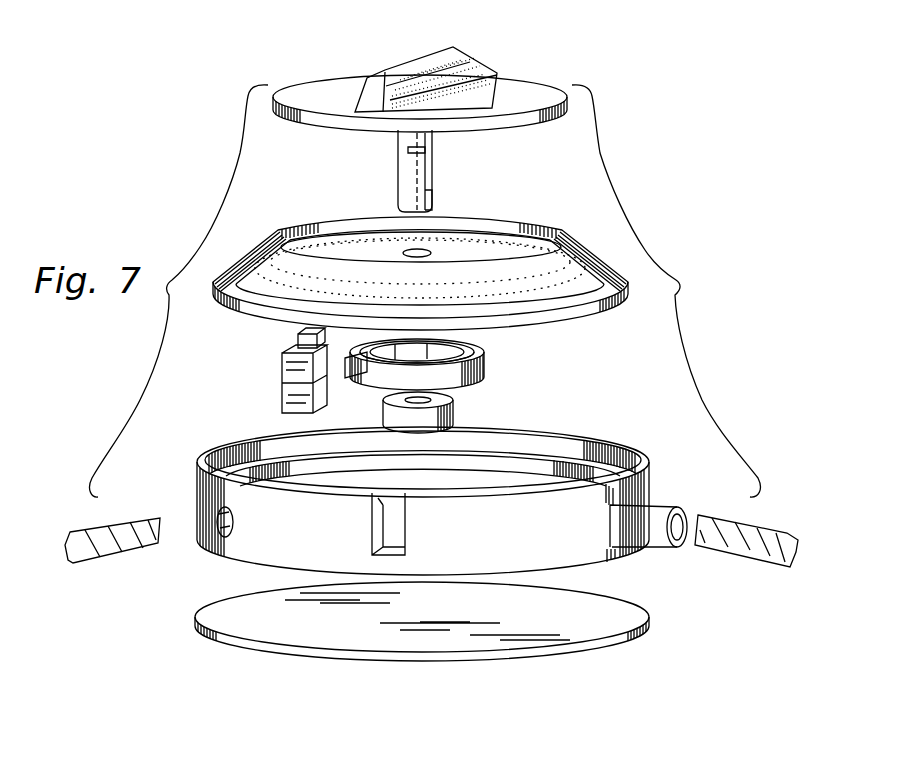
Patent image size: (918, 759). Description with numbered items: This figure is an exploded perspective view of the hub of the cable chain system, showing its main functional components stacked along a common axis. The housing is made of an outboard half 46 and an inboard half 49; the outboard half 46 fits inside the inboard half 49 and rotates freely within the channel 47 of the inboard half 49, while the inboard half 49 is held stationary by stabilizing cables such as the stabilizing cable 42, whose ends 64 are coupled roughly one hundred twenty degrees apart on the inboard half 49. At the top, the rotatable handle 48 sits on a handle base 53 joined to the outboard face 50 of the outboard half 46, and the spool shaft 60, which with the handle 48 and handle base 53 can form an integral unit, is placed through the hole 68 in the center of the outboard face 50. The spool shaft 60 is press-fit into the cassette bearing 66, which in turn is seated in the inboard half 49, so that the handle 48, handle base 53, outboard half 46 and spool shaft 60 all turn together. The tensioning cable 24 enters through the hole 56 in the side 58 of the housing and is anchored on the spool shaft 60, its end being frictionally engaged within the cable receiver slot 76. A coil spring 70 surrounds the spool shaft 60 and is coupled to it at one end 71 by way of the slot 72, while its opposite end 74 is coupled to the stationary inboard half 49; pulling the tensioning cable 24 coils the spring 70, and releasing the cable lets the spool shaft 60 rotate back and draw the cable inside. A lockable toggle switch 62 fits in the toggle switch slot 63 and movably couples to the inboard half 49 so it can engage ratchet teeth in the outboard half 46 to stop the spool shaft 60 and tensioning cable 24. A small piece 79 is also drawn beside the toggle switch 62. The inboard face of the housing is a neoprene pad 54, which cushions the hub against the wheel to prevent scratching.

The handle base 53 is at (513, 88).
The rotatable handle 48 is at (432, 63).
The spool shaft 60 is at (413, 177).
The cable receiver slot 76 is at (430, 150).
The slot 72 is at (432, 200).
The outboard face 50 is at (483, 256).
The outboard half 46 is at (605, 310).
The hole 68 is at (415, 250).
The pin 79 is at (298, 336).
The toggle switch 62 is at (282, 388).
The coil spring 70 is at (483, 364).
The end of coil spring 71 is at (412, 358).
The opposite end of coil spring 74 is at (357, 372).
The cassette bearing 66 is at (453, 403).
The side of housing 58 is at (520, 544).
The inboard half 49 is at (645, 480).
The channel 47 is at (583, 455).
The hole 56 is at (233, 525).
The toggle switch slot 63 is at (376, 530).
The ends of stabilizing cables 64 is at (723, 515).
The stabilizing cable 42 is at (772, 560).
The tensioning cable 24 is at (92, 558).
The neoprene pad 54 is at (530, 618).